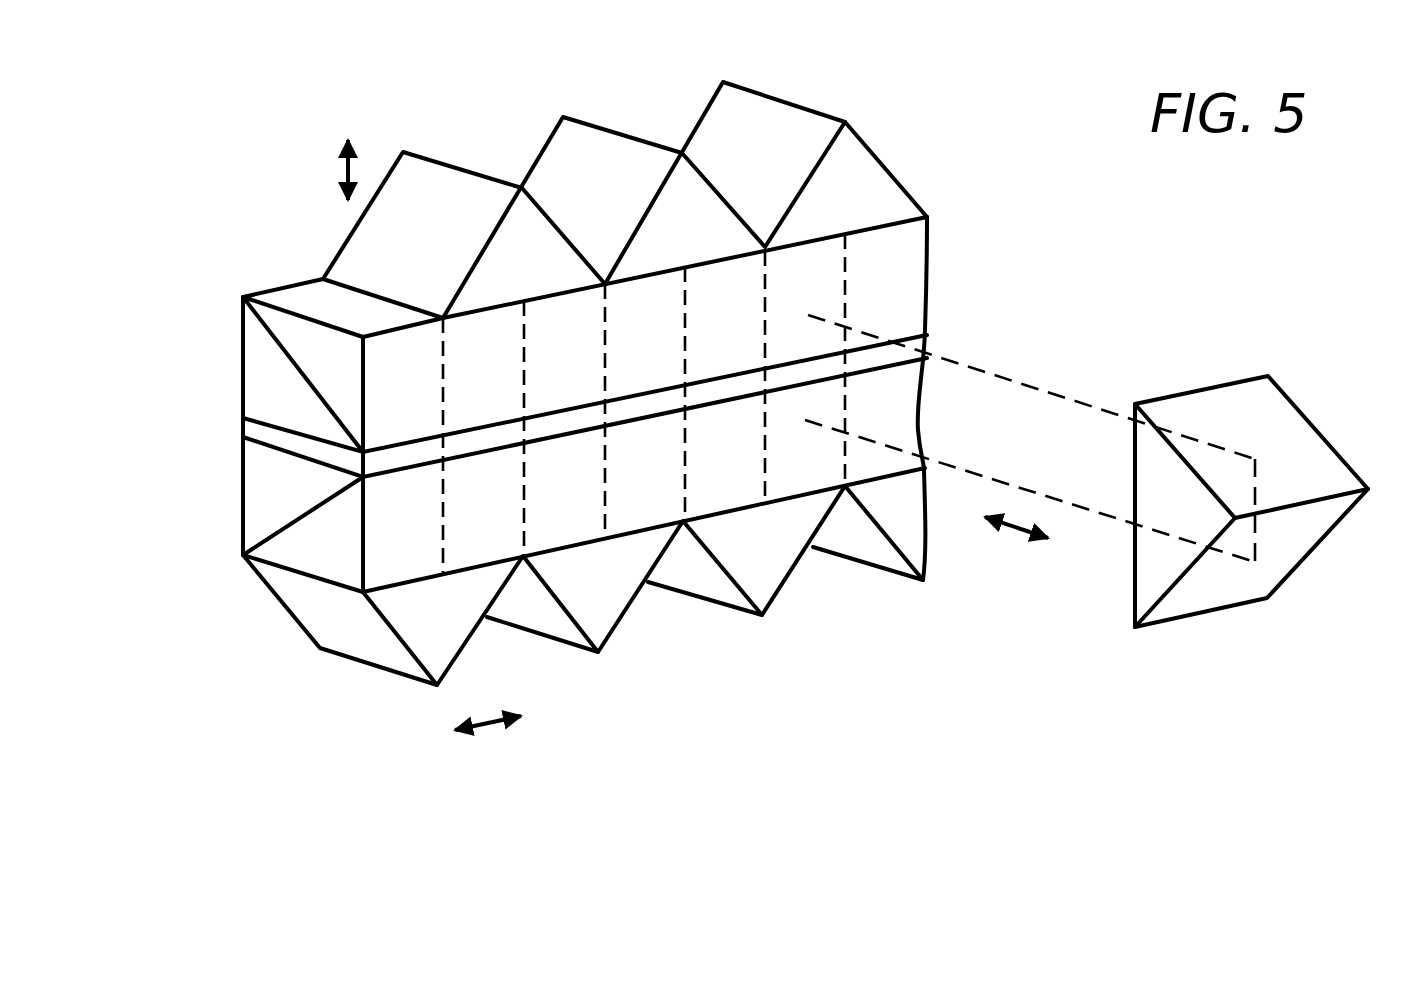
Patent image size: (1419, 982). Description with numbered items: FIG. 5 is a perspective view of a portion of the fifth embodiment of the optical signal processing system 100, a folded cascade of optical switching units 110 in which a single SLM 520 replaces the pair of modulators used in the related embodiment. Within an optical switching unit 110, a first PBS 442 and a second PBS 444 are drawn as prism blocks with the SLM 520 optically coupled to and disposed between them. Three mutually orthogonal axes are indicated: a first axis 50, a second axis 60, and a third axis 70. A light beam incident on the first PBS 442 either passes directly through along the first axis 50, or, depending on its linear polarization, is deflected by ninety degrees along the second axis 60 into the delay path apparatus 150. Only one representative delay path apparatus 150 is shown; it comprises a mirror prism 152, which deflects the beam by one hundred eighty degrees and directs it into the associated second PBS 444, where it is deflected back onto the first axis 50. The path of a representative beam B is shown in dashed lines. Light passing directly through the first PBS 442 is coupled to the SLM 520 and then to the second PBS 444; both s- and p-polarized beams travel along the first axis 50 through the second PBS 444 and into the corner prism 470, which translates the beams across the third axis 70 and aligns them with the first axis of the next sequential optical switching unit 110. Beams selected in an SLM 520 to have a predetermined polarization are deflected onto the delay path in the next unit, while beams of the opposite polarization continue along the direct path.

The optical signal processing system 100 is at (163, 160).
The optical switching unit 110 is at (183, 302).
The first PBS 442 is at (262, 372).
The second PBS 444 is at (262, 510).
The SLM 520 is at (252, 432).
The corner prism 470 is at (465, 170).
The first axis 50 is at (348, 163).
The second axis 60 is at (1017, 530).
The third axis 70 is at (488, 717).
The delay path apparatus 150 is at (1219, 441).
The mirror prism 152 is at (1256, 501).
The representative beam B is at (1040, 387).